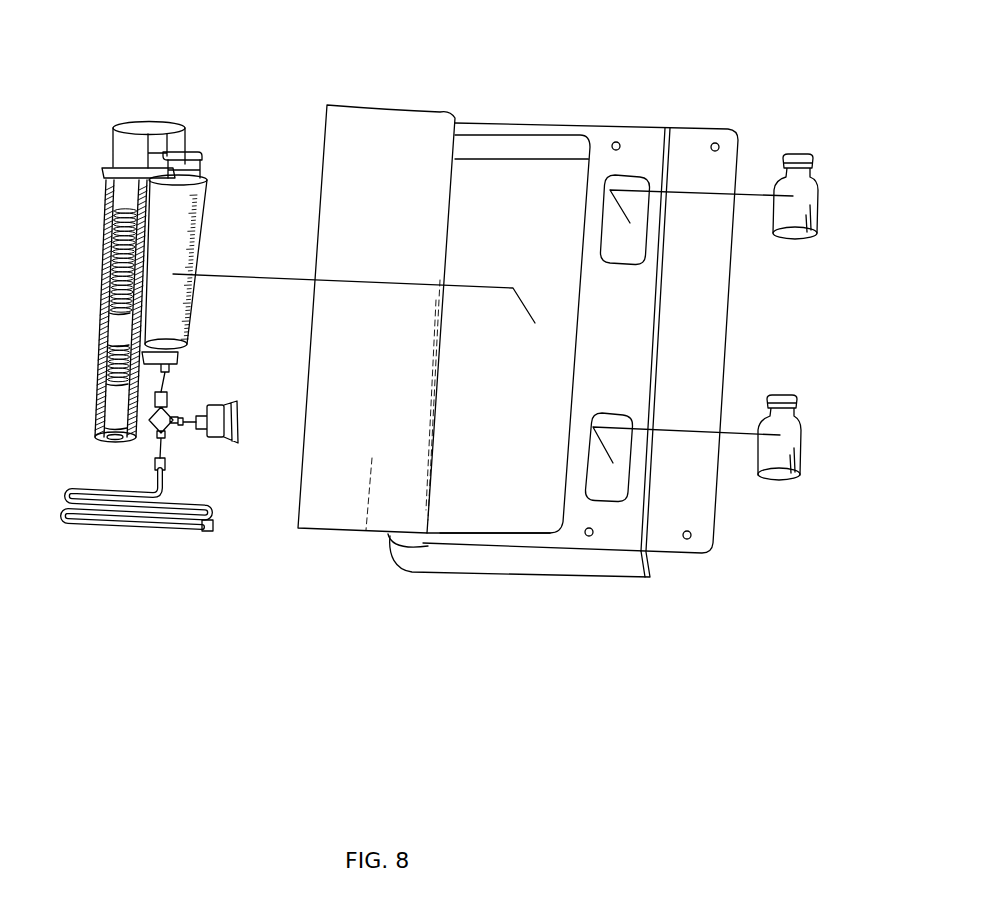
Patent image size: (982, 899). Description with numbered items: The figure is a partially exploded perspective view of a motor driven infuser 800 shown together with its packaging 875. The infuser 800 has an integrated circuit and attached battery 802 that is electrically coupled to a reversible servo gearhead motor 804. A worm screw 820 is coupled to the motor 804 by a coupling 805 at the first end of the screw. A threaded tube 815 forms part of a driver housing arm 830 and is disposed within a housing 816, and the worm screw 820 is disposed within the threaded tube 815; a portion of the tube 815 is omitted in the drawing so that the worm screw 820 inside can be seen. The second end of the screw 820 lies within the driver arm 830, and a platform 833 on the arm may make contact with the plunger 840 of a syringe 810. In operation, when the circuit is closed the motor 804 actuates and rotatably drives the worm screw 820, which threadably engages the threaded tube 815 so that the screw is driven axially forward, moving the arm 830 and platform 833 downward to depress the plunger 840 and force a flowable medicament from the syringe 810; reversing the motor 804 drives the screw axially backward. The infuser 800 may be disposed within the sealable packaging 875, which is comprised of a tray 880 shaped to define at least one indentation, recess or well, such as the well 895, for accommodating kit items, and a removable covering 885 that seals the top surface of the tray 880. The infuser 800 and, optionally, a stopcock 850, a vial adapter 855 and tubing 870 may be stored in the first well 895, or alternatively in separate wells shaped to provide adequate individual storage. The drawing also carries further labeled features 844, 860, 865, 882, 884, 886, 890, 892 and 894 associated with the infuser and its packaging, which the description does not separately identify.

The infuser 800 is at (90, 190).
The integrated circuit and attached battery 802 is at (108, 439).
The reversible servo gearhead motor 804 is at (113, 407).
The coupling 805 is at (110, 378).
The syringe 810 is at (173, 262).
The threaded tube 815 is at (118, 200).
The housing 816 is at (106, 280).
The worm screw 820 is at (127, 245).
The driver housing arm 830 is at (140, 126).
The platform 833 is at (174, 153).
The plunger 840 is at (200, 160).
The base tray 844 is at (513, 558).
The stopcock 850 is at (170, 400).
The vial adapter 855 is at (218, 443).
The tubing line 860 is at (234, 440).
The connector 865 is at (233, 403).
The tubing 870 is at (110, 521).
The sealable packaging 875 is at (582, 95).
The tray 880 is at (643, 127).
The fold edge 882 is at (641, 545).
The mounting hole 884 is at (590, 535).
The removable covering 885 is at (371, 116).
The mounting hole 886 is at (690, 538).
The inner panel edge 890 is at (531, 534).
The vials 892 is at (810, 237).
The vial slots 894 is at (605, 425).
The well 895 is at (495, 168).